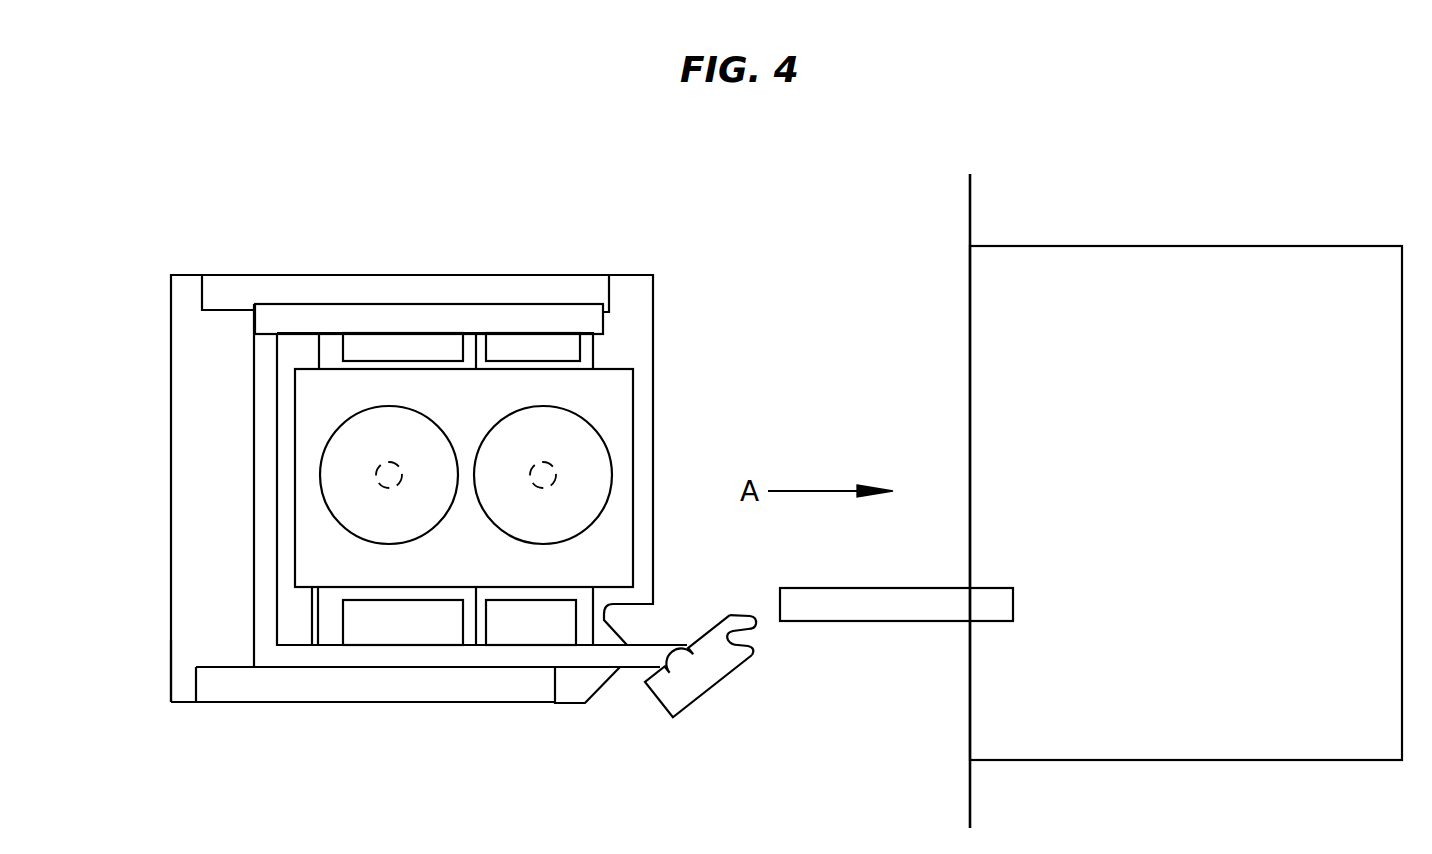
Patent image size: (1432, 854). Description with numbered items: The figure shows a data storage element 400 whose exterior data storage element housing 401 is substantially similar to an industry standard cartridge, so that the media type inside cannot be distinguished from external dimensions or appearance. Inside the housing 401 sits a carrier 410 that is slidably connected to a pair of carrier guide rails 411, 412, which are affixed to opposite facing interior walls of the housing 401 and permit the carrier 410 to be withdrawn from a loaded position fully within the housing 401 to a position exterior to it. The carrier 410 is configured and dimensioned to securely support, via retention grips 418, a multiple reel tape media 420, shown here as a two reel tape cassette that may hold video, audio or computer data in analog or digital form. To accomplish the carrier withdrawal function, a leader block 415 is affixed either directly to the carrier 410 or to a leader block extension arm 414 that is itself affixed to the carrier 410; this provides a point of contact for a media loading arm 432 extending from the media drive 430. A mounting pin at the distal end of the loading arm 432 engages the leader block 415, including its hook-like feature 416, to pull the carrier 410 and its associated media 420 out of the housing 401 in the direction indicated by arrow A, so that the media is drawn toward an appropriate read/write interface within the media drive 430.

The data storage element 400 is at (240, 262).
The exterior data storage element housing 401 is at (171, 653).
The carrier 410 is at (254, 513).
The carrier guide rail 411 is at (423, 285).
The carrier guide rail 412 is at (300, 688).
The leader block extension arm 414 is at (630, 660).
The leader block 415 is at (717, 668).
The hook notch 416 is at (748, 634).
The retention grips 418 is at (518, 625).
The multiple reel tape media 420 is at (617, 404).
The media drive 430 is at (1282, 245).
The media loading arm 432 is at (885, 612).